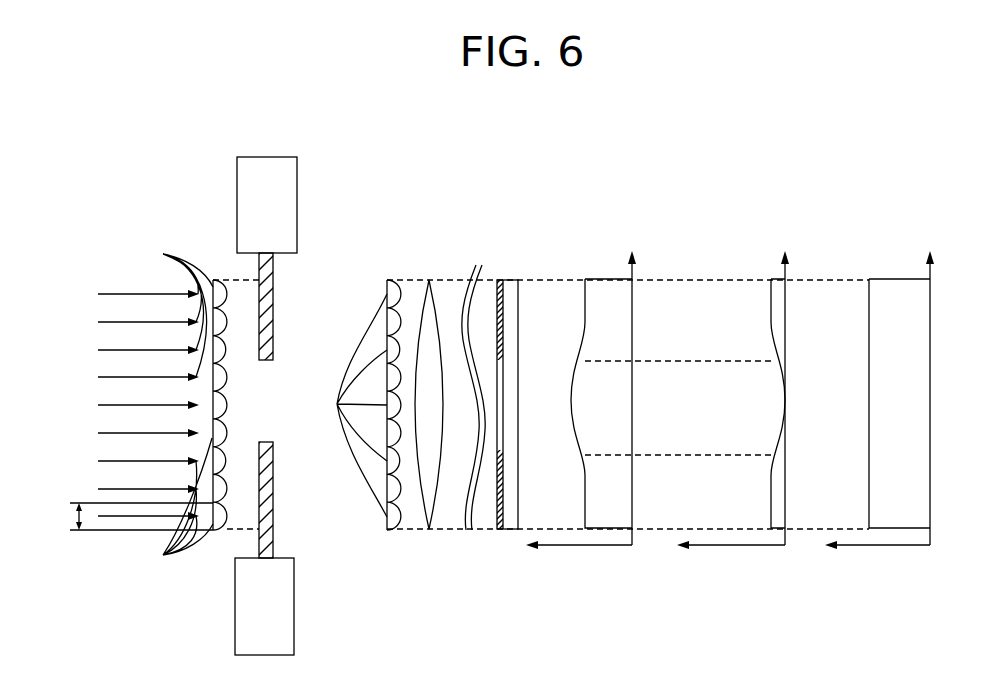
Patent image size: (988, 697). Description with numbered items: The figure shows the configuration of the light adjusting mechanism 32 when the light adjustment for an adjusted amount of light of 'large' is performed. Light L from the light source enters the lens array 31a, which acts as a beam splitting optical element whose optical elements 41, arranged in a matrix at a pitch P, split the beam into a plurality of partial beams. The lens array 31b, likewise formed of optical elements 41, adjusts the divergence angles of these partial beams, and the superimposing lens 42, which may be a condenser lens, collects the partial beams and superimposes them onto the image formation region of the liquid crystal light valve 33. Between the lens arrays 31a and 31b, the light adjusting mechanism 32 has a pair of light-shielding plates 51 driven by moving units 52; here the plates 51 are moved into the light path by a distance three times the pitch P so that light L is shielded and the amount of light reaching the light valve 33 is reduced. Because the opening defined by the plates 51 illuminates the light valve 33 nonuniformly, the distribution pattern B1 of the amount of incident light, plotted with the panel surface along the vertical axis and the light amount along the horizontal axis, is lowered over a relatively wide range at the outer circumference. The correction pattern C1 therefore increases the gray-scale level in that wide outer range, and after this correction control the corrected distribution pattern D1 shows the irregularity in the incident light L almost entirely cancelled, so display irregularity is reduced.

The light L is at (120, 286).
The optical elements 41 is at (255, 398).
The lens array 31a is at (210, 547).
The lens array 31b is at (386, 548).
The light adjusting mechanism 32 is at (324, 385).
The light-shielding plate 51 is at (273, 264).
The moving unit 52 is at (285, 205).
The superimposing lens 42 is at (430, 280).
The liquid crystal light valve 33 is at (506, 280).
The pitch P is at (131, 518).
The distribution pattern of the amount of incident light B1 is at (607, 262).
The correction pattern C1 is at (769, 262).
The corrected distribution pattern of the amount of light D1 is at (900, 262).